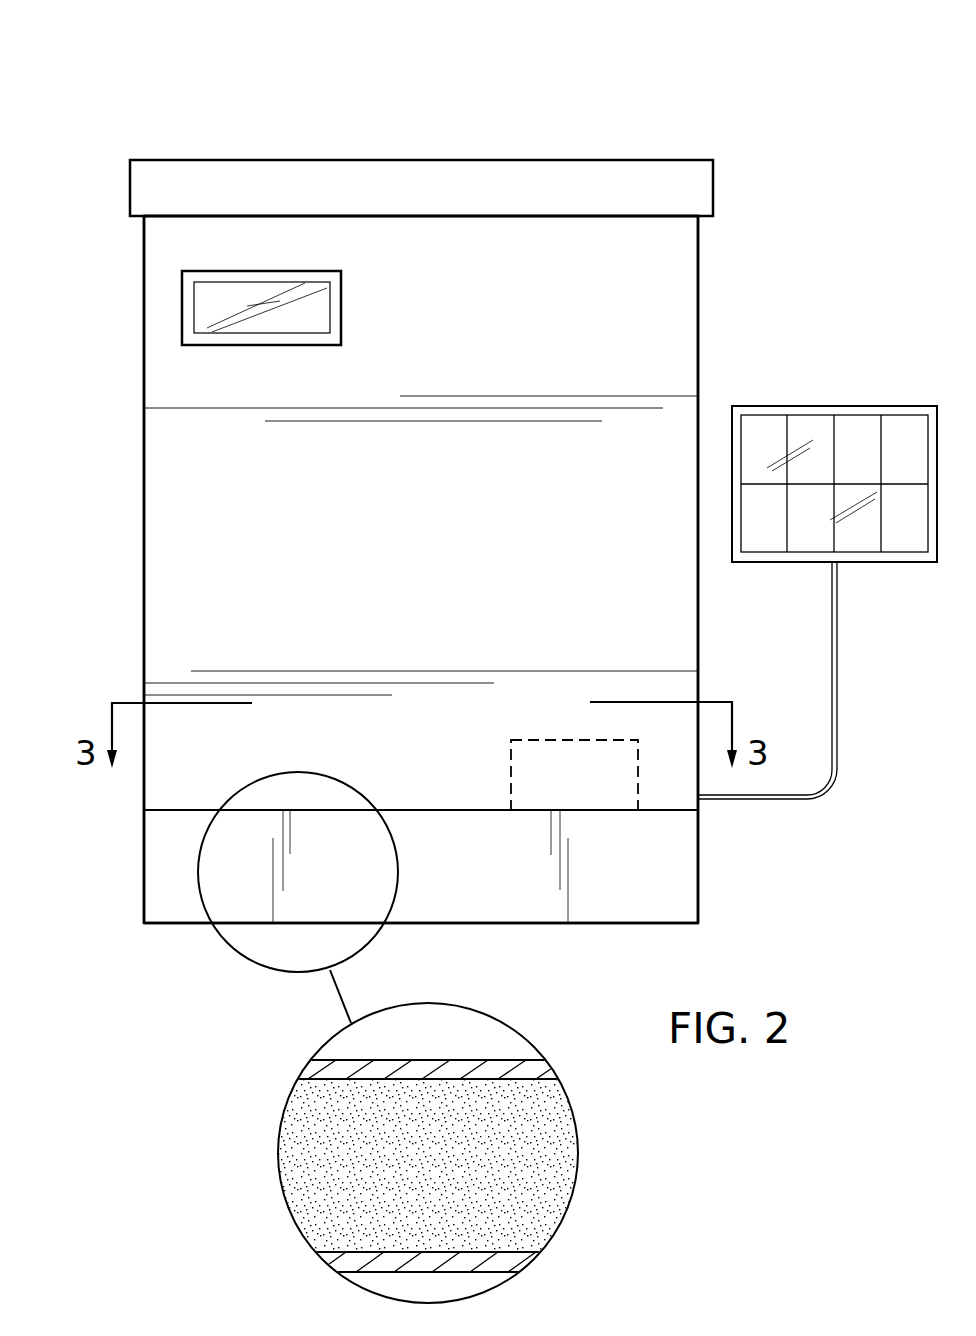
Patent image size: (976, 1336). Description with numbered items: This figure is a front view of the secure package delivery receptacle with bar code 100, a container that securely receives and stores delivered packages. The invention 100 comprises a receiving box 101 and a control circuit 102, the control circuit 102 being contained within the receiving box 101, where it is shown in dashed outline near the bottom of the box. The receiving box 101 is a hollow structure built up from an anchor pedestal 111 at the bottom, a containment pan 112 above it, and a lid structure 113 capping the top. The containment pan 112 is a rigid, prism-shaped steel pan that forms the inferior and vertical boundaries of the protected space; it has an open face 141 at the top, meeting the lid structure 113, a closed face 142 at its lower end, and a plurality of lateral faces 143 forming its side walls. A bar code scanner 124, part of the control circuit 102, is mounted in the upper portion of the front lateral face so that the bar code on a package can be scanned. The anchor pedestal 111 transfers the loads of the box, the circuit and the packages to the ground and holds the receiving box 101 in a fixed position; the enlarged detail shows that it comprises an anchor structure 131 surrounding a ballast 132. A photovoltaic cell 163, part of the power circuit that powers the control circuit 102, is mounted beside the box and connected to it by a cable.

The secure package delivery receptacle with bar code 100 is at (138, 124).
The receiving box 101 is at (122, 313).
The control circuit 102 is at (562, 755).
The anchor pedestal 111 is at (698, 866).
The containment pan 112 is at (698, 318).
The lid structure 113 is at (713, 187).
The bar code scanner 124 is at (342, 303).
The anchor structure 131 is at (537, 1067).
The ballast 132 is at (530, 1145).
The open face 141 is at (509, 216).
The closed face 142 is at (448, 810).
The lateral faces 143 is at (144, 561).
The photovoltaic cell 163 is at (900, 537).